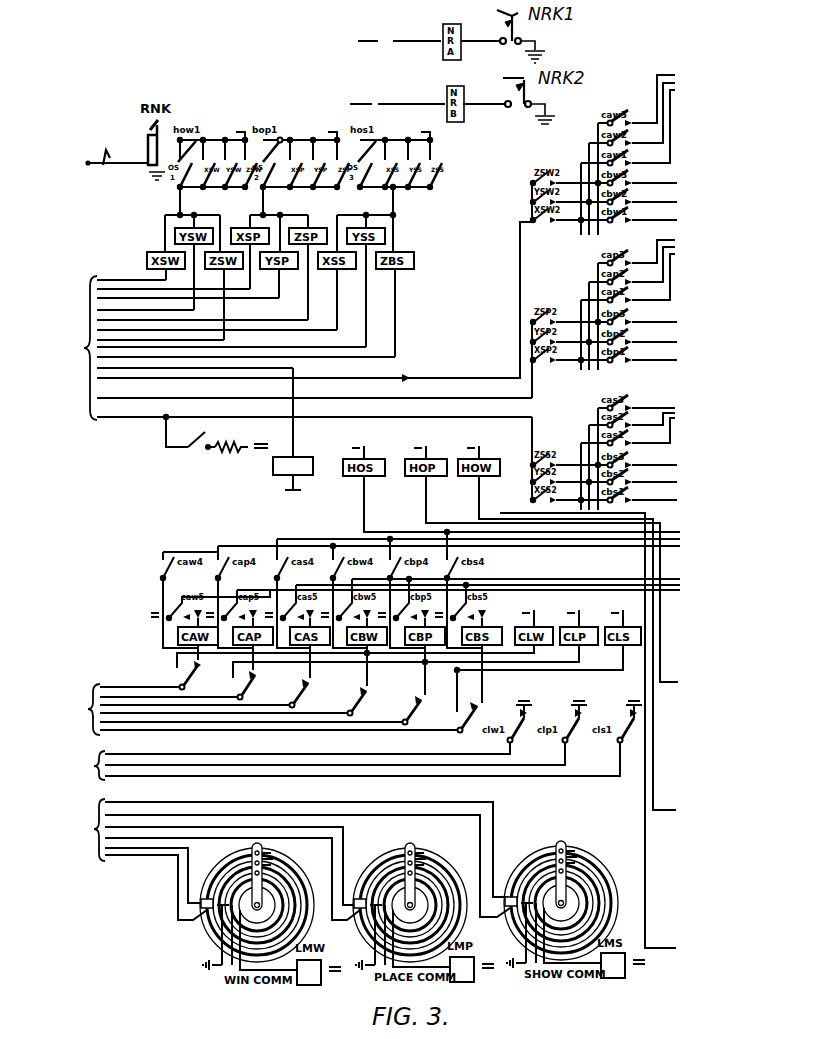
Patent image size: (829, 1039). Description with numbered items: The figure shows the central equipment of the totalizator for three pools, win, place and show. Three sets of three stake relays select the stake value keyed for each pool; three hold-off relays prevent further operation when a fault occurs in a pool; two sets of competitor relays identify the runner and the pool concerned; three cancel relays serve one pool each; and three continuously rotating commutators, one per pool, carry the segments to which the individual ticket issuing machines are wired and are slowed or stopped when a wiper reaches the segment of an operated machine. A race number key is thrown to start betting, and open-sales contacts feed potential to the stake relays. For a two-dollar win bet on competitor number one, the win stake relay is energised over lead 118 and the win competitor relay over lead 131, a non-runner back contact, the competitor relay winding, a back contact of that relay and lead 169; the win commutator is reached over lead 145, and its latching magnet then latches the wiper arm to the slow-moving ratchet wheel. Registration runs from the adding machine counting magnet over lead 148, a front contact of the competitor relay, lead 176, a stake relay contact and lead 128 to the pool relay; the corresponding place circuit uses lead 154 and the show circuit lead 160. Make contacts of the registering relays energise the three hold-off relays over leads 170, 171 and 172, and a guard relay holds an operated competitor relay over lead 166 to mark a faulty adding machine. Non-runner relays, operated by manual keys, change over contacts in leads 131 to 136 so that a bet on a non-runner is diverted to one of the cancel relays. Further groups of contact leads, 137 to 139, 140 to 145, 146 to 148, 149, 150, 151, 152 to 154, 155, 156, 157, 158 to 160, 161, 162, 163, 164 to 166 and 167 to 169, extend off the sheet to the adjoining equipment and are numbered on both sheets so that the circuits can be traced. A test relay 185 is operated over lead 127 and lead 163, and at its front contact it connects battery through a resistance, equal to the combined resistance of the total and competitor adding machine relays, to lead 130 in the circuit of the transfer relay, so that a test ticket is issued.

The lead 118 is at (294, 389).
The lead 130 is at (77, 348).
The lead 127 is at (294, 433).
The lead 128 is at (518, 257).
The lead 131 is at (269, 698).
The lead 136 is at (80, 710).
The conductor bundle 137 to 139 137 is at (344, 766).
The conductor bundle 137 to 139 is at (86, 770).
The conductor bundle 140 to 145 140 is at (291, 858).
The lead 145 is at (86, 830).
The conductors 146 to 148 146 is at (675, 96).
The lead 148 is at (698, 88).
The conductor 149 is at (671, 182).
The conductor 150 is at (671, 202).
The conductor 151 is at (671, 220).
The conductors 152 to 154 152 is at (675, 264).
The lead 154 is at (698, 257).
The conductor 155 is at (671, 322).
The conductor 156 is at (671, 342).
The conductor 157 is at (671, 360).
The conductors 158 to 160 158 is at (675, 426).
The lead 160 is at (698, 419).
The conductor 161 is at (671, 465).
The conductor 162 is at (671, 482).
The lead 163 is at (671, 500).
The conductors 164 to 166 164 is at (680, 556).
The lead 166 is at (703, 549).
The conductors 167 to 169 167 is at (680, 602).
The lead 169 is at (703, 596).
The lead 170 is at (569, 585).
The lead 171 is at (596, 647).
The lead 172 is at (606, 735).
The lead 176 is at (582, 170).
The test relay 185 is at (272, 471).